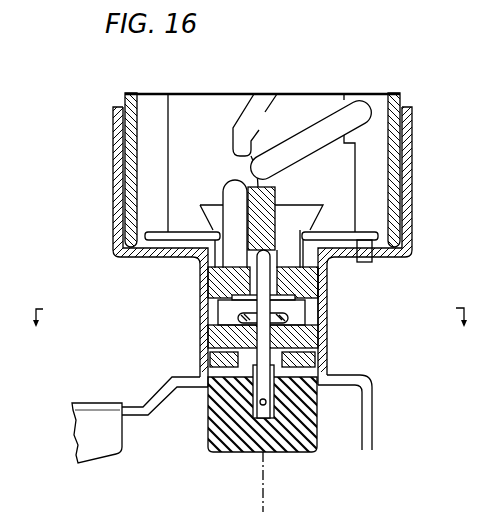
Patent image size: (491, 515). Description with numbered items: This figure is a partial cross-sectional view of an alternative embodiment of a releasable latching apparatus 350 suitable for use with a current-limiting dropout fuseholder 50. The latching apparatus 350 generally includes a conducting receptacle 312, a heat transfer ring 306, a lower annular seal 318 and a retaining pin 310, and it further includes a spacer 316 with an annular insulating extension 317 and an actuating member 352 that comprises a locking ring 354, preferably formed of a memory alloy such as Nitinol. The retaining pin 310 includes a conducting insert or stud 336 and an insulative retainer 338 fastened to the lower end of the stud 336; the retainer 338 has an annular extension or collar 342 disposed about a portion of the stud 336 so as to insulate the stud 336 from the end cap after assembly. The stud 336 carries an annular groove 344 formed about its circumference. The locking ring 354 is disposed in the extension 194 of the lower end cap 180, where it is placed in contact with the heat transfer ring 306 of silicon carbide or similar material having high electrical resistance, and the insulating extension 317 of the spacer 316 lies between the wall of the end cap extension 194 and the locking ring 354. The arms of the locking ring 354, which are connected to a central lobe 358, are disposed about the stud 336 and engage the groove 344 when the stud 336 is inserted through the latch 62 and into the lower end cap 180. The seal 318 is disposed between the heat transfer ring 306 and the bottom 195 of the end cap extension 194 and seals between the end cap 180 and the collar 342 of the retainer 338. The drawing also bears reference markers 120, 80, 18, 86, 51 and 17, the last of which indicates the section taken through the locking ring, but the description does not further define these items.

The current-limiting dropout fuseholder 50 is at (419, 90).
The cover 120 is at (230, 137).
The lower end cap 180 is at (127, 210).
The roller pin 80 is at (357, 110).
The conducting receptacle 312 is at (280, 197).
The valve assembly 18 is at (345, 163).
The stop 86 is at (357, 232).
The spacer 316 is at (327, 275).
The end cap extension 194 is at (206, 272).
The annular groove 344 is at (232, 312).
The locking ring 354 is at (238, 318).
The actuating member 352 is at (327, 307).
The stud 336 is at (327, 288).
The annular insulating extension 317 is at (327, 322).
The heat transfer ring 306 is at (327, 342).
The releasable latching apparatus 350 is at (408, 359).
The bottom of end cap extension 195 is at (225, 358).
The lower annular seal 318 is at (322, 361).
The annular extension or collar 342 is at (212, 400).
The retaining pin 310 is at (222, 420).
The insulative retainer 338 is at (312, 432).
The latch 62 is at (88, 411).
The axis rod 51 is at (265, 502).
The central lobe 358 is at (348, 483).
The section line 17 is at (262, 329).